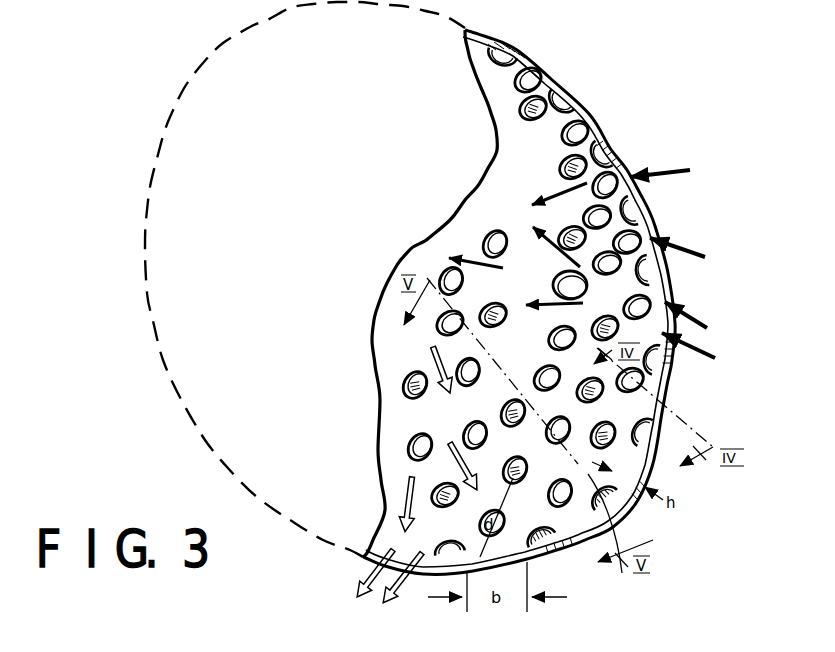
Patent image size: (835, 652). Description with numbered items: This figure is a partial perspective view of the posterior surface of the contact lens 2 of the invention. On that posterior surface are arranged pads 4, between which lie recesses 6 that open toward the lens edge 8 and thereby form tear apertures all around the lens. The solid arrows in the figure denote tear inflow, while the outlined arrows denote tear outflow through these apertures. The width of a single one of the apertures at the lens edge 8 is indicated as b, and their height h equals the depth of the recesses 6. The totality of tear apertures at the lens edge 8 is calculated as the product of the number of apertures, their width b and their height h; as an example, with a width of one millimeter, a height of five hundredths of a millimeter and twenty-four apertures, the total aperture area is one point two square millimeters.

The contact lens 2 is at (610, 115).
The pad 4 is at (531, 121).
The recess 6 is at (480, 58).
The lens edge 8 is at (567, 544).